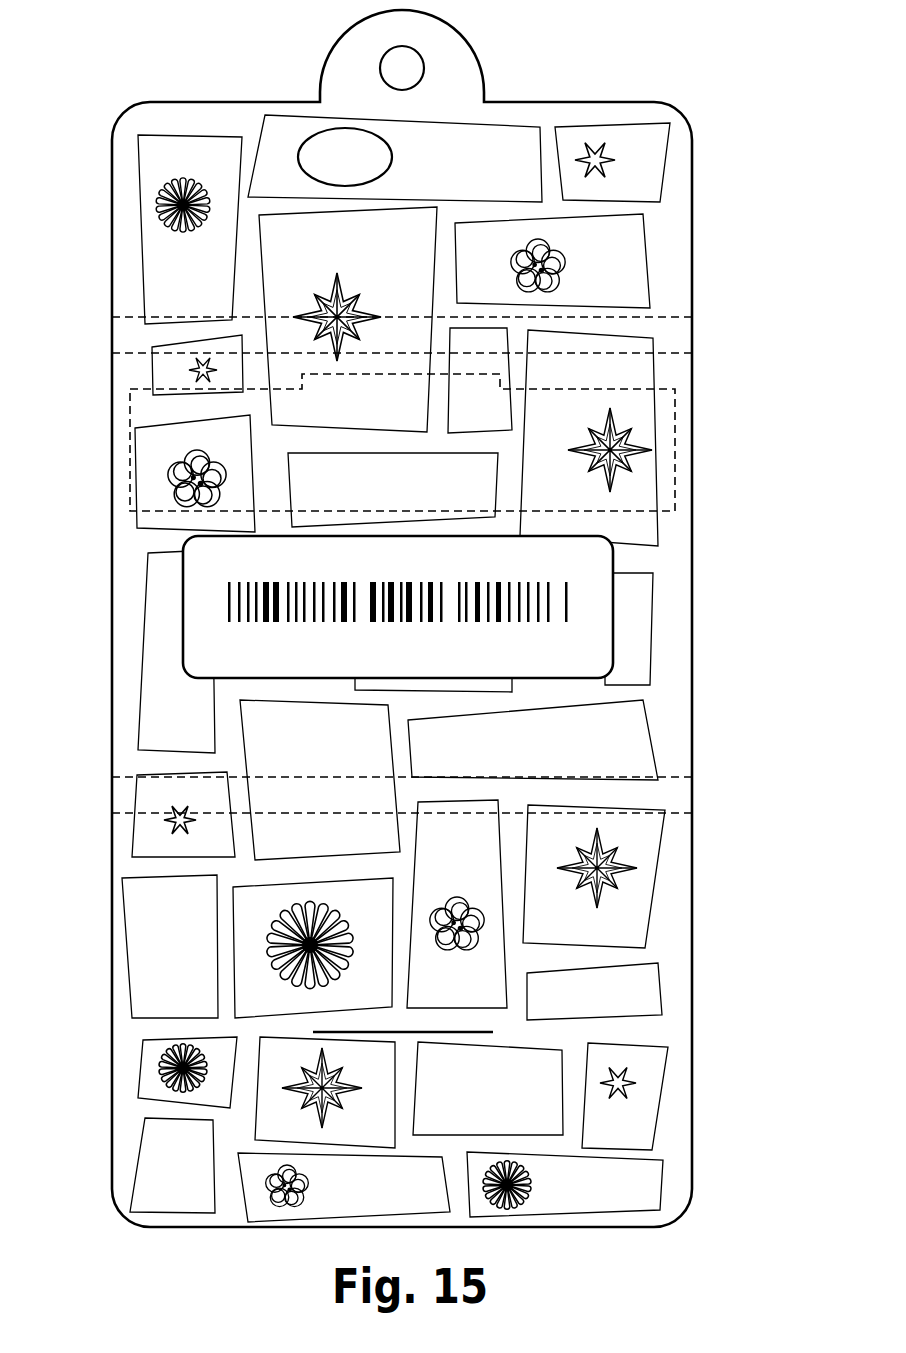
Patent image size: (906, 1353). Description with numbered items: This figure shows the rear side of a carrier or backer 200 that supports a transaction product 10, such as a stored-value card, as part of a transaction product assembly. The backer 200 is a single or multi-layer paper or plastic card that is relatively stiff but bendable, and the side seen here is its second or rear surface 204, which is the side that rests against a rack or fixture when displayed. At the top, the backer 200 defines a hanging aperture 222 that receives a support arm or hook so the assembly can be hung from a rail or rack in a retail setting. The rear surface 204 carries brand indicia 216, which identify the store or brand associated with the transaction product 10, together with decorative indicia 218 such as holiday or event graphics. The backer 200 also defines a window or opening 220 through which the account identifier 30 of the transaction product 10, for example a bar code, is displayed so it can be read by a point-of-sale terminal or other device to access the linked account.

The backer 200 is at (177, 67).
The hanging aperture 222 is at (385, 60).
The brand indicia 216 is at (478, 143).
The rear surface 204 is at (148, 202).
The window 220 is at (622, 583).
The account identifier 30 is at (575, 605).
The transaction product 10 is at (590, 660).
The decorative indicia 218 is at (668, 901).